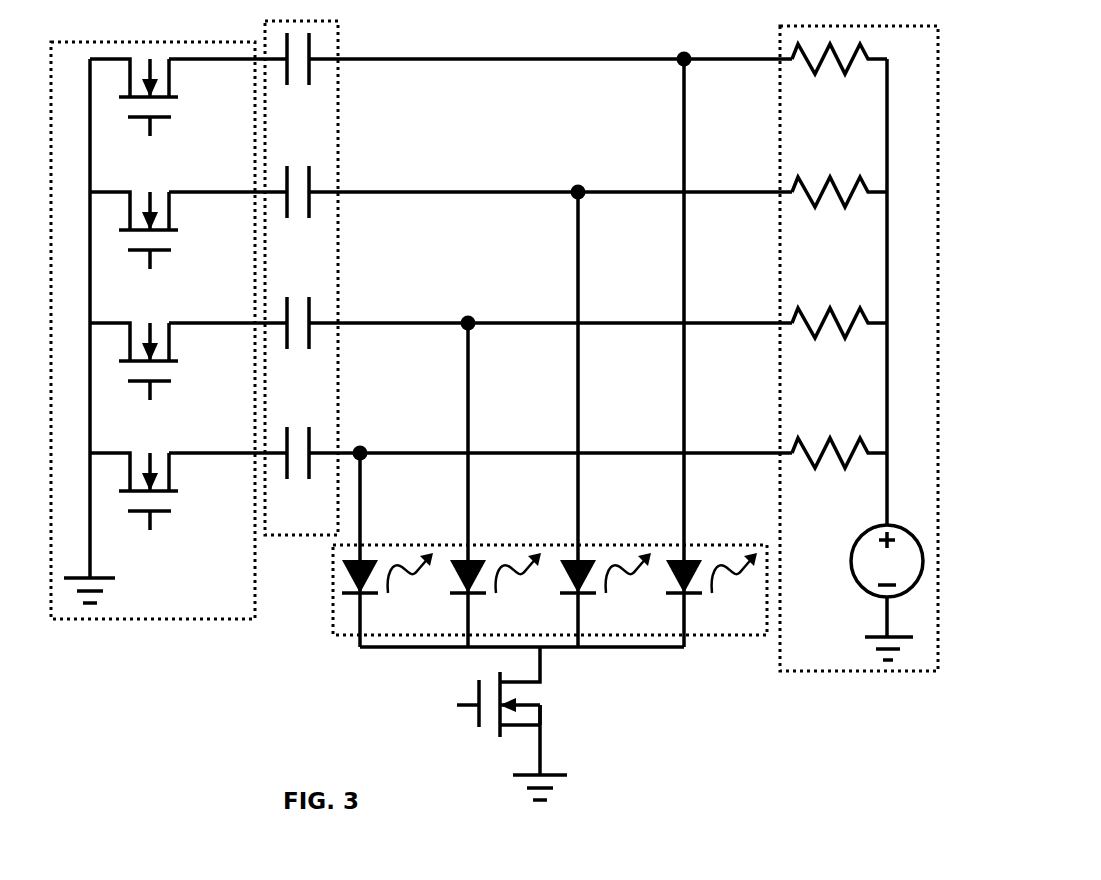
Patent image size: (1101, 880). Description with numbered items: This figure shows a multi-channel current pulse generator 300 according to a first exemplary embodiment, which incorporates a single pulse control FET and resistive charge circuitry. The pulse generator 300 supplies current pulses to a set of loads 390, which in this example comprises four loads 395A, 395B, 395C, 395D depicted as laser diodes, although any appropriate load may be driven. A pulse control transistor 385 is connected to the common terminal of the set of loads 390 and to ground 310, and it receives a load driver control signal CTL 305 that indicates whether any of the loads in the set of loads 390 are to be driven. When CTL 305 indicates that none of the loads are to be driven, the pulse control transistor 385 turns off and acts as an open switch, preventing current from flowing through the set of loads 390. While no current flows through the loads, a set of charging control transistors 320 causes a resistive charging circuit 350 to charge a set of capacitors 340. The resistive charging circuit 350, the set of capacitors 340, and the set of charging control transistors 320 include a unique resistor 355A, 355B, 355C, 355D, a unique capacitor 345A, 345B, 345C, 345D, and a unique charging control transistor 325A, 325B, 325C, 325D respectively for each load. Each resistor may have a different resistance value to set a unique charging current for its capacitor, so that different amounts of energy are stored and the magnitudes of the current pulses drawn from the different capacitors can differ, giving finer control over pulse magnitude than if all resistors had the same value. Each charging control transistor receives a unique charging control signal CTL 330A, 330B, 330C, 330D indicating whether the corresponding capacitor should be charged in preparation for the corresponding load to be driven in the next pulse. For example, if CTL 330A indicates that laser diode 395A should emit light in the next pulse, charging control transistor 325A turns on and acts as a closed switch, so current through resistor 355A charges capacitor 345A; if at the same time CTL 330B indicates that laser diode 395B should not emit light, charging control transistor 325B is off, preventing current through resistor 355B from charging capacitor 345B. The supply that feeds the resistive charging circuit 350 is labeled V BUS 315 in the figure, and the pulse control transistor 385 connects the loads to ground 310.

The multi-channel current pulse generator 300 is at (993, 153).
The load driver control signal CTL 305 is at (419, 703).
The ground 310 is at (488, 698).
The bus voltage source V_BUS 315 is at (857, 561).
The set of charging control transistors 320 is at (183, 619).
The charging control transistor 325A is at (188, 473).
The charging control transistor 325B is at (188, 343).
The charging control transistor 325C is at (188, 212).
The charging control transistor 325D is at (188, 79).
The charging control signal CTL 330A is at (158, 537).
The charging control signal CTL 330B is at (158, 407).
The charging control signal CTL 330C is at (158, 276).
The charging control signal CTL 330D is at (159, 143).
The set of capacitors 340 is at (305, 535).
The capacitor 345A is at (532, 470).
The capacitor 345B is at (532, 338).
The capacitor 345C is at (532, 207).
The capacitor 345D is at (532, 74).
The resistive charging circuit 350 is at (798, 671).
The resistor 355A is at (839, 470).
The resistor 355B is at (839, 346).
The resistor 355C is at (839, 215).
The resistor 355D is at (839, 82).
The pulse control transistor 385 is at (547, 692).
The set of loads 390 is at (742, 635).
The laser diode 395A is at (387, 600).
The laser diode 395B is at (495, 600).
The laser diode 395C is at (605, 600).
The laser diode 395D is at (711, 600).